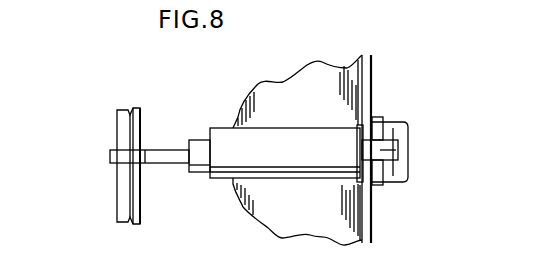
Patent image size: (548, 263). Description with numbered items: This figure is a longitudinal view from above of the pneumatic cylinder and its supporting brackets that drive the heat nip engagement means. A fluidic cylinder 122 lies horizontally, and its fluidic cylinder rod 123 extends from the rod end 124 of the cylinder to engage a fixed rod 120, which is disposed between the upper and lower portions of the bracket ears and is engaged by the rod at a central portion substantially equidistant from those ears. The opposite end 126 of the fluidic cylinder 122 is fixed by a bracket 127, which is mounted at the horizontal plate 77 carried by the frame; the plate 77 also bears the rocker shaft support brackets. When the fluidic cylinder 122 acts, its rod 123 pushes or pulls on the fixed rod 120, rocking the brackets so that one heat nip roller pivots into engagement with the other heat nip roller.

The horizontal plate 77 is at (313, 220).
The fixed rod 120 is at (123, 130).
The fluidic cylinder 122 is at (340, 142).
The fluidic cylinder rod 123 is at (172, 163).
The rod end 124 is at (197, 145).
The opposite end 126 is at (395, 150).
The bracket 127 is at (400, 172).